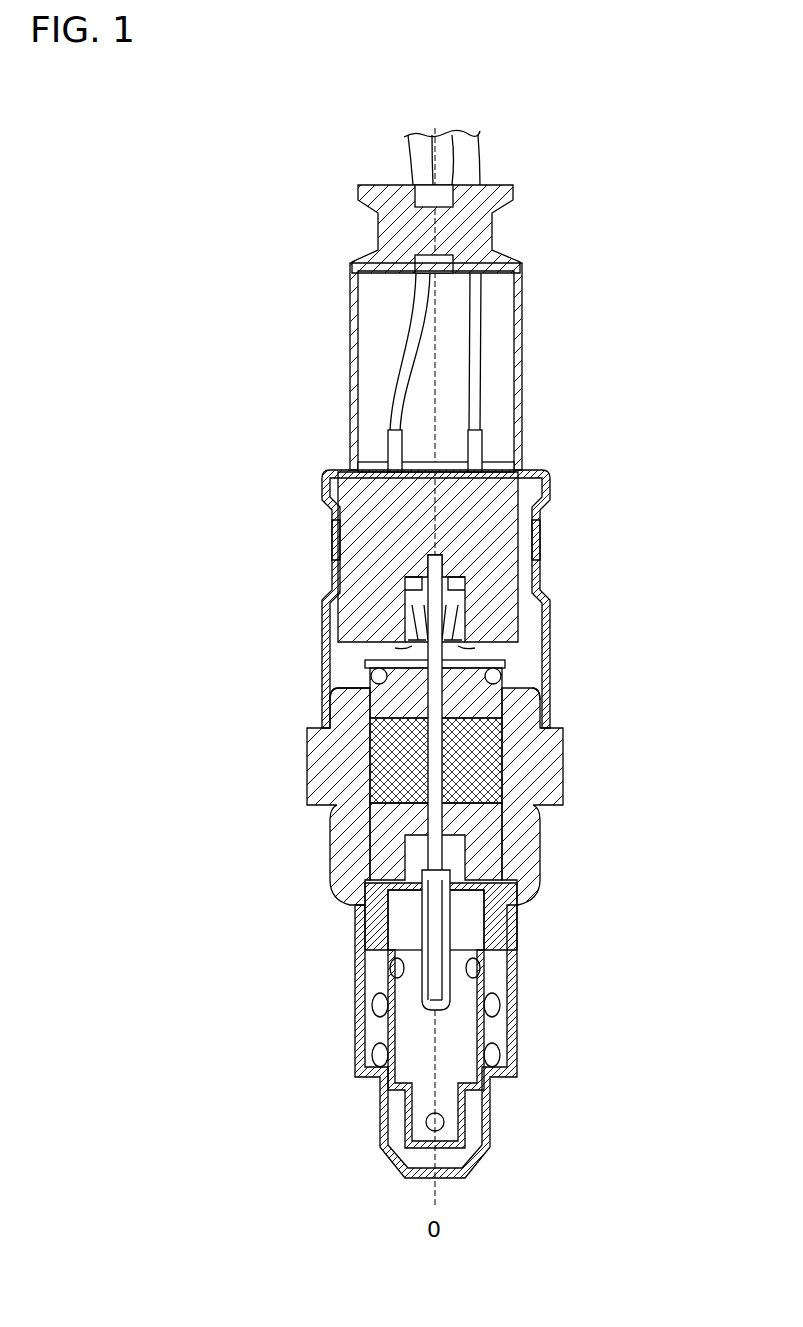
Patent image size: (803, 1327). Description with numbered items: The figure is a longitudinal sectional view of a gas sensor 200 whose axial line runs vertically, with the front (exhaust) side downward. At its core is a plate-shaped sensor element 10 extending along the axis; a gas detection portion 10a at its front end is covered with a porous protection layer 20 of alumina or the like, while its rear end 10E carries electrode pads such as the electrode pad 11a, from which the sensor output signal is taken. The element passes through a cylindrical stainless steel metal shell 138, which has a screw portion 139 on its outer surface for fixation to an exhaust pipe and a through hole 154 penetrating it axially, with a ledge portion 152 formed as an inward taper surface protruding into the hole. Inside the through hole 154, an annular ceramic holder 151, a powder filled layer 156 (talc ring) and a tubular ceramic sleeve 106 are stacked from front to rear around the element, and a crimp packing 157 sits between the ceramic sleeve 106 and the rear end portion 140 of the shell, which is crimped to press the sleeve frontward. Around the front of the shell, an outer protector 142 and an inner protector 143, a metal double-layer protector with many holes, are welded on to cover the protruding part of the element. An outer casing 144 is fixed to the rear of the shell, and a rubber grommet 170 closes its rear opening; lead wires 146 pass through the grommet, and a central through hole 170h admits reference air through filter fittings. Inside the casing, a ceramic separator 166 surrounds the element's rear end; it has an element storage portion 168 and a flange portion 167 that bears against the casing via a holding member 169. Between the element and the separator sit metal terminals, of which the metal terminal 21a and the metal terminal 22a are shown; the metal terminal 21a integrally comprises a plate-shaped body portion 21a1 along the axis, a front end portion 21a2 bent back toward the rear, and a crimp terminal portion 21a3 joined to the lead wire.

The gas sensor 200 is at (574, 132).
The lead wires 146 is at (478, 155).
The grommet 170 is at (372, 230).
The through hole 170h is at (356, 273).
The outer casing 144 is at (522, 375).
The crimp terminal portion 21a3 is at (384, 452).
The separator 166 is at (345, 480).
The flange portion 167 is at (322, 490).
The holding member 169 is at (333, 540).
The element storage portion 168 is at (540, 545).
The rear end 10E is at (420, 560).
The electrode pad 11a is at (405, 600).
The metal terminal 21a is at (410, 622).
The body portion 21a1 is at (395, 648).
The front end portion 21a2 is at (395, 655).
The metal terminal 22a is at (555, 625).
The rear end portion 140 is at (505, 662).
The crimp packing 157 is at (500, 676).
The ceramic sleeve 106 is at (545, 694).
The metal shell 138 is at (318, 768).
The screw portion 139 is at (325, 850).
The powder filled layer 156 is at (500, 755).
The ceramic holder 151 is at (520, 850).
The ledge portion 152 is at (380, 885).
The through hole 154 is at (462, 910).
The outer protector 142 is at (355, 1055).
The inner protector 143 is at (378, 1090).
The sensor element 10 is at (420, 692).
The porous protection layer 20 is at (462, 990).
The gas detection portion 10a is at (428, 978).